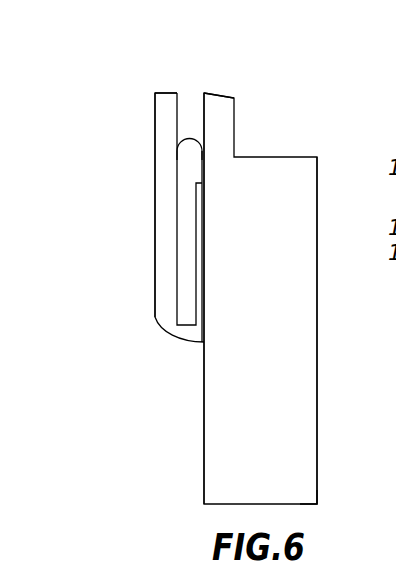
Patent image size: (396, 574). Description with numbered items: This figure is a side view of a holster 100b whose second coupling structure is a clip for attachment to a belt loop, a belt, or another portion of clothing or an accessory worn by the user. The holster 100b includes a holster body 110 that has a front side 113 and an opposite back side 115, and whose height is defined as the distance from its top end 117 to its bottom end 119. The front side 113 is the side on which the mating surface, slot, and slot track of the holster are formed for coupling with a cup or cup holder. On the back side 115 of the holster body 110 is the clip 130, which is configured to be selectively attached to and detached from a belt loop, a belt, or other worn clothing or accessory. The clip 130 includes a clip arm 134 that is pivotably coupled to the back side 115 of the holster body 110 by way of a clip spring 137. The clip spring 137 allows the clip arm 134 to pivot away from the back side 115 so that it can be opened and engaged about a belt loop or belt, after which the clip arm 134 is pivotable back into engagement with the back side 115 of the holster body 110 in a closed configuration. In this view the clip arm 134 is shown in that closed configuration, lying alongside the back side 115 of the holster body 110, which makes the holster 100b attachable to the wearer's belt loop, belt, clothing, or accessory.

The holster 100b is at (136, 76).
The holster body 110 is at (203, 449).
The front side 113 is at (322, 280).
The back side 115 is at (196, 383).
The top end 117 is at (222, 95).
The bottom end 119 is at (309, 511).
The clip 130 is at (148, 234).
The clip arm 134 is at (155, 198).
The clip spring 137 is at (190, 138).